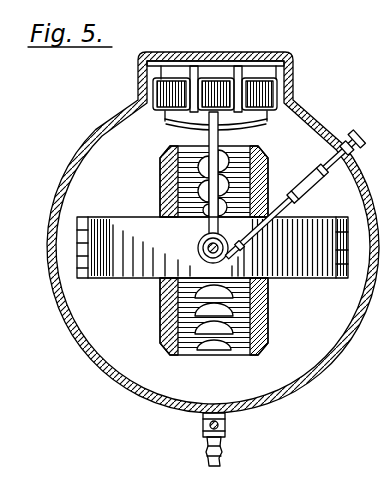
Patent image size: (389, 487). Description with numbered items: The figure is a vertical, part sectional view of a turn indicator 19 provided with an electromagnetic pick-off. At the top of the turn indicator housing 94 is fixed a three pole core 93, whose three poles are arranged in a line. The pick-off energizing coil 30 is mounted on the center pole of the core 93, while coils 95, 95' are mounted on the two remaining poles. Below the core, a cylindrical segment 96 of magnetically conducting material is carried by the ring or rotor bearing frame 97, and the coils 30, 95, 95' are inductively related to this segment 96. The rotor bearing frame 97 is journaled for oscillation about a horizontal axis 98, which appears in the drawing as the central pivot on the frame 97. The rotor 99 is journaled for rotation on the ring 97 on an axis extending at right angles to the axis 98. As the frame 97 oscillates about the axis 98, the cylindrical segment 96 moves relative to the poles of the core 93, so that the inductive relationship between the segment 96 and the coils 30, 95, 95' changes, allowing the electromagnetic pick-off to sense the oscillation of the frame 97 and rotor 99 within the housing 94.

The pressure responsive instrument 19 is at (80, 98).
The turn indicator housing 94 is at (166, 53).
The pick-off energizing coil 30 is at (228, 82).
The three pole core 93 is at (288, 74).
The coil 95 is at (147, 94).
The coil 95' is at (291, 96).
The cylindrical segment 96 is at (168, 130).
The rotor bearing frame 97 is at (118, 218).
The horizontal axis 98 is at (204, 262).
The rotor 99 is at (267, 318).